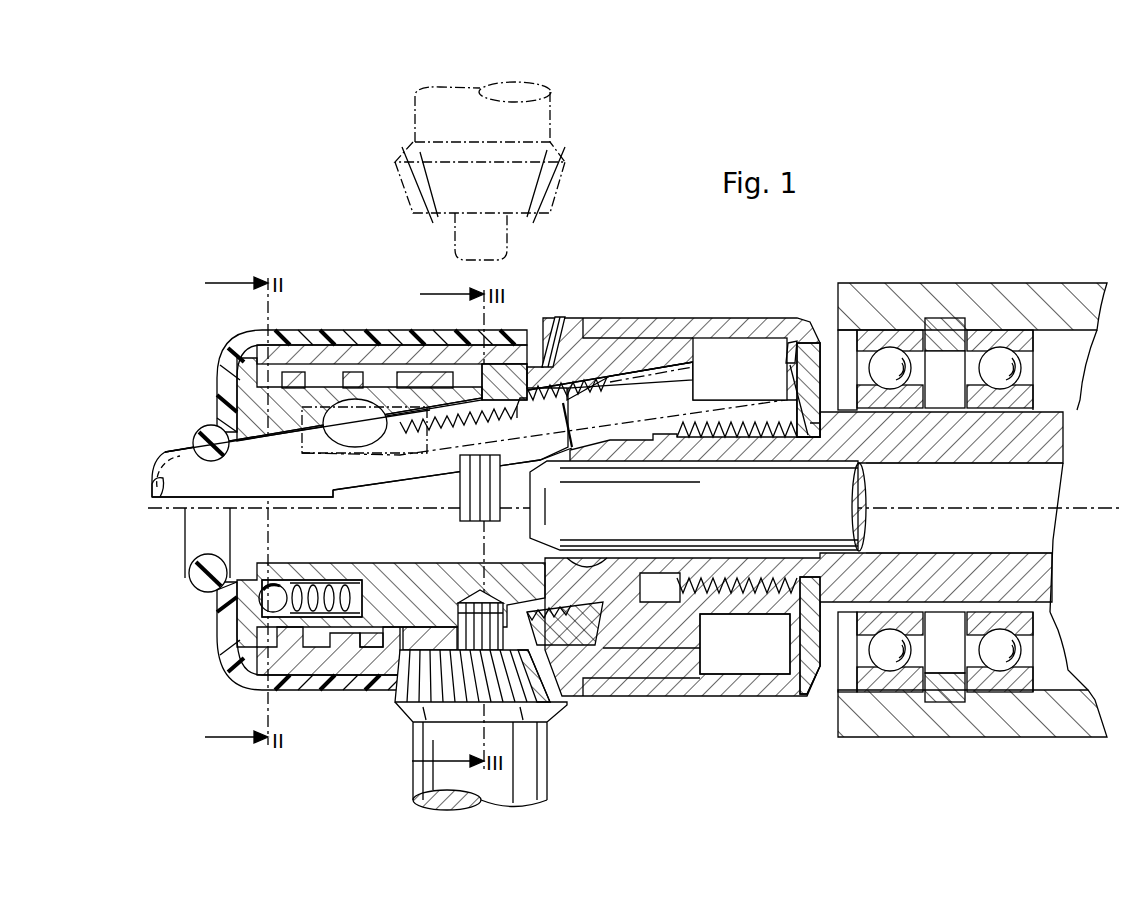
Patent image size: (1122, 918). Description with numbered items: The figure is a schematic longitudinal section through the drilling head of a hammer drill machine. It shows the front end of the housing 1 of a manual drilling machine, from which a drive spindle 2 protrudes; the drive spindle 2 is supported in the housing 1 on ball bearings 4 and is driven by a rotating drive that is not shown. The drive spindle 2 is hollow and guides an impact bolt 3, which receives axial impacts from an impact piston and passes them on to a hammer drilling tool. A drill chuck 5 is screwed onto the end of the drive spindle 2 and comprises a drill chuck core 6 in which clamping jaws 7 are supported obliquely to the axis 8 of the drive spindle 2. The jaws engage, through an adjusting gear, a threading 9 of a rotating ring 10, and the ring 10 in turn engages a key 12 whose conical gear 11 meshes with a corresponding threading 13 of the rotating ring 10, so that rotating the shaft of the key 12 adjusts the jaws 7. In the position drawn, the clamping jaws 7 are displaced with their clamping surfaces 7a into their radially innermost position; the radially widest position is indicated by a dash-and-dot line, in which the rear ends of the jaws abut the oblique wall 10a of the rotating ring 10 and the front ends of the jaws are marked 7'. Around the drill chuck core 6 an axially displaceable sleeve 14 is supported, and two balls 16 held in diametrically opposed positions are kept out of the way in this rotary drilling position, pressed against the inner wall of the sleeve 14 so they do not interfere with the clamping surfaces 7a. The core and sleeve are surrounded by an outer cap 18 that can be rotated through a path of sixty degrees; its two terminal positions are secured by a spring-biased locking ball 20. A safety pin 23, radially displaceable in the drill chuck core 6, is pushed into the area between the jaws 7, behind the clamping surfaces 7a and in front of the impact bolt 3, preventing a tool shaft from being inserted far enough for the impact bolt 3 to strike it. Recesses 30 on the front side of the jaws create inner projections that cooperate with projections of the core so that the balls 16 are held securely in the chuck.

The housing 1 is at (978, 727).
The drive spindle 2 is at (1065, 442).
The impact bolt 3 is at (856, 530).
The ball bearings 4 is at (1003, 330).
The drill chuck 5 is at (641, 292).
The drill chuck core 6 is at (697, 628).
The clamping jaws 7 is at (422, 433).
The front ends of the jaws 7' is at (297, 448).
The clamping surfaces 7a is at (172, 500).
The axis 8 is at (998, 512).
The threading 9 is at (612, 403).
The rotating ring 10 is at (672, 338).
The oblique wall 10a is at (793, 340).
The conical gear 11 is at (407, 693).
The key 12 is at (523, 788).
The threading 13 is at (547, 317).
The sleeve 14 is at (427, 415).
The balls 16 is at (363, 384).
The outer cap 18 is at (310, 688).
The locking ball 20 is at (270, 582).
The safety pin 23 is at (458, 515).
The recesses 30 is at (163, 455).